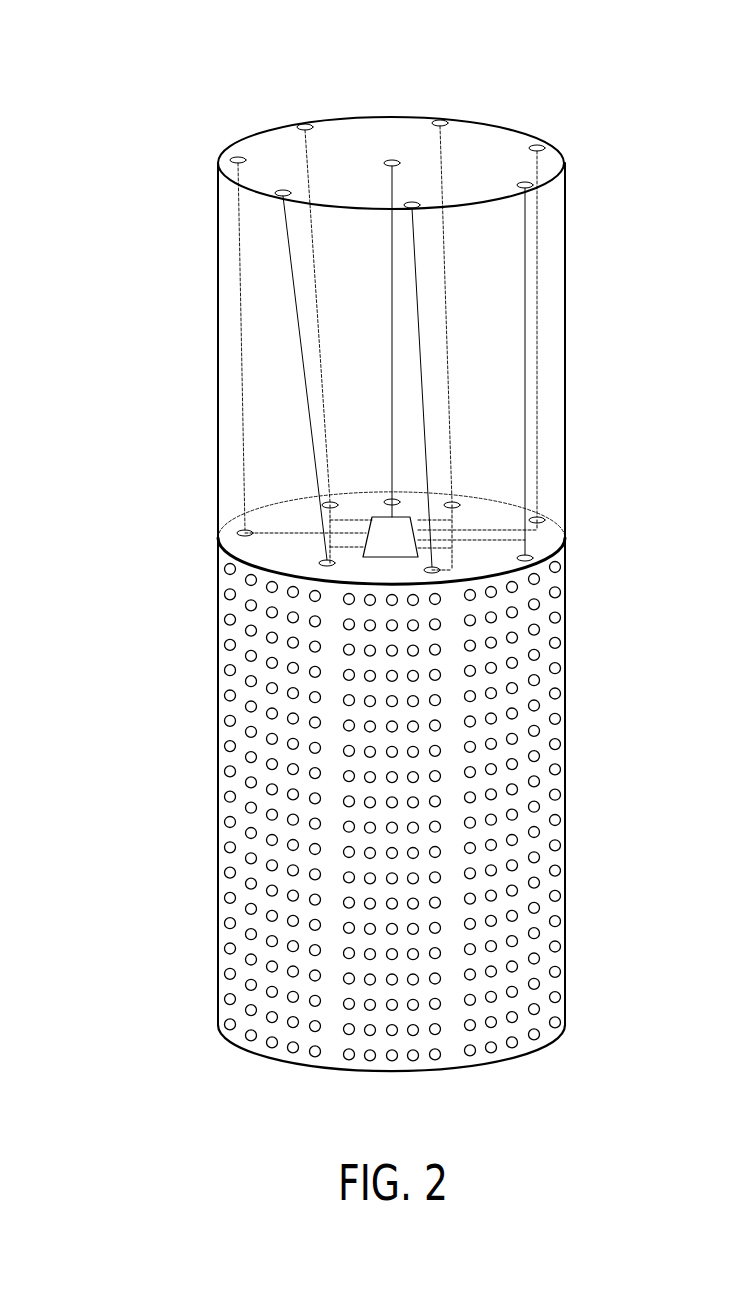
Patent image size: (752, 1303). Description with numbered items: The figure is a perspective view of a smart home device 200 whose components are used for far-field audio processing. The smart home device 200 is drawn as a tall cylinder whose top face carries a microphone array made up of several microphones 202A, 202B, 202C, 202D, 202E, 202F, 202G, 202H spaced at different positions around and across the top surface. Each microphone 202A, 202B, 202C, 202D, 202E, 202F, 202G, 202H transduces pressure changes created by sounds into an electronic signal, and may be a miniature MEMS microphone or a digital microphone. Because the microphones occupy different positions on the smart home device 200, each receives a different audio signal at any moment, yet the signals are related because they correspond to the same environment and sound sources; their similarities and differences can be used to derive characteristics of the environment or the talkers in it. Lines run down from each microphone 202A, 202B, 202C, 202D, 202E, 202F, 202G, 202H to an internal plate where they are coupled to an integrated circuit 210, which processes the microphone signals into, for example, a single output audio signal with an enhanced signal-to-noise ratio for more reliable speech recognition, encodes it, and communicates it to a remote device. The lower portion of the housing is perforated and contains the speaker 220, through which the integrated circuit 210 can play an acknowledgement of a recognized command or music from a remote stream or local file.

The smart home device 200 is at (166, 77).
The microphone 202A is at (443, 122).
The microphone 202B is at (541, 148).
The microphone 202C is at (531, 187).
The microphone 202D is at (407, 207).
The microphone 202E is at (280, 195).
The microphone 202F is at (231, 159).
The microphone 202G is at (298, 126).
The microphone 202H is at (391, 160).
The integrated circuit 210 is at (380, 515).
The speaker 220 is at (567, 684).